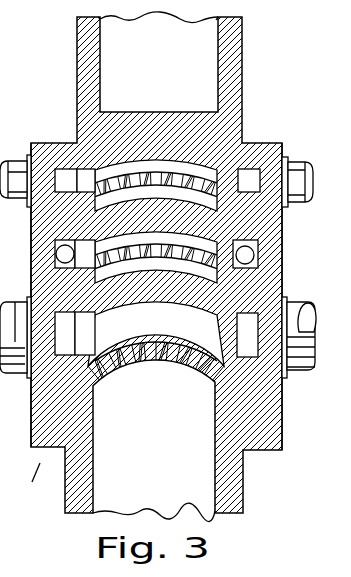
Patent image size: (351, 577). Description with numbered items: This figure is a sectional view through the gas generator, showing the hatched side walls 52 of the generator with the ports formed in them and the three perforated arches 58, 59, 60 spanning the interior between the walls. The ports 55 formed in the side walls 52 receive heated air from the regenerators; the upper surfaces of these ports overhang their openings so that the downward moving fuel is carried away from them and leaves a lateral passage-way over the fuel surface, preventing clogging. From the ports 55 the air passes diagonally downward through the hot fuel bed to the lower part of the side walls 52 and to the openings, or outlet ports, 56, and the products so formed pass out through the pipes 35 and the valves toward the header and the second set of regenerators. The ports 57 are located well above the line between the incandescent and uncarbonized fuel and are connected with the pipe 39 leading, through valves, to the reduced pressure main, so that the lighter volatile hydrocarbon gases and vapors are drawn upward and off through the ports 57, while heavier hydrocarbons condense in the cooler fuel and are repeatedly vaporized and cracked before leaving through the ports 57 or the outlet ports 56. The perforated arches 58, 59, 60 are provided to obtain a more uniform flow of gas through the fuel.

The pipes 35 is at (15, 374).
The pipe 39 is at (16, 168).
The side walls 52 is at (15, 295).
The ports 55 is at (283, 240).
The openings, or outlet ports 56 is at (111, 370).
The ports 57 is at (121, 160).
The perforated arch 58 is at (151, 173).
The perforated arch 59 is at (148, 266).
The perforated arch 60 is at (153, 352).